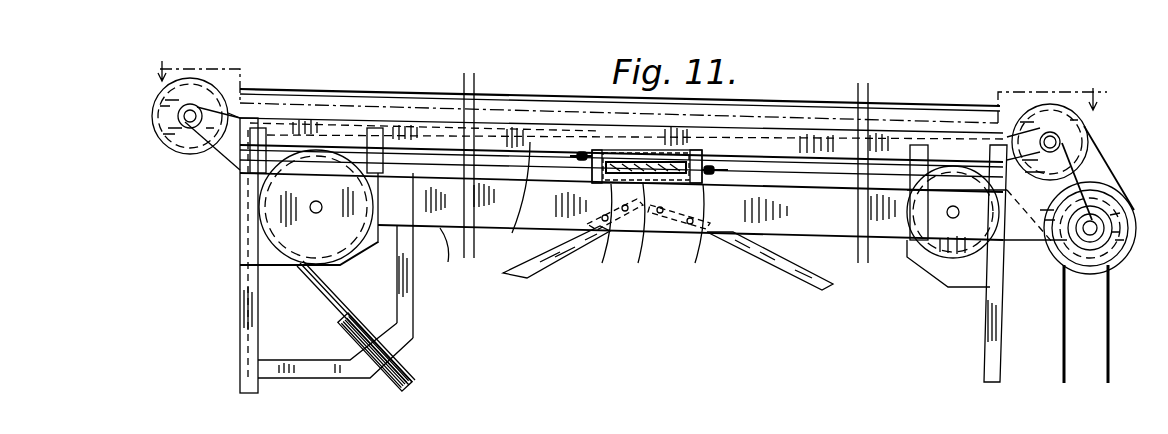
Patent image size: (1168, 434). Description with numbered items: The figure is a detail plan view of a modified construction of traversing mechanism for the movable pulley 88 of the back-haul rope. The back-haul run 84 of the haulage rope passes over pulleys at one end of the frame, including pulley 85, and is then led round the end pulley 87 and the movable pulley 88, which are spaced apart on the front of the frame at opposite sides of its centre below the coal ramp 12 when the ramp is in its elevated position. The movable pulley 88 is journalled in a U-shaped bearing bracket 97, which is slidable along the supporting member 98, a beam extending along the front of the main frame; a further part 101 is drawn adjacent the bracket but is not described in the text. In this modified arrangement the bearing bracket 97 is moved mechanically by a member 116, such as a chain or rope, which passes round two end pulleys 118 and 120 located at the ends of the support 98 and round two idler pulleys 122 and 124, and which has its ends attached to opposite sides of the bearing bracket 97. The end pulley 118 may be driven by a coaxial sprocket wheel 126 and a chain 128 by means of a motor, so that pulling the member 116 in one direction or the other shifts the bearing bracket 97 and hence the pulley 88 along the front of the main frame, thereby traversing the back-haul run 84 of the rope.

The coal ramp 12 is at (632, 81).
The back-haul run 84 is at (330, 298).
The pulley 85 is at (388, 377).
The end pulley 87 is at (262, 229).
The movable pulley 88 is at (648, 236).
The bearing bracket 97 is at (598, 150).
The supporting member 98 is at (457, 179).
The arm 101 is at (557, 215).
The member 116 is at (470, 233).
The end pulley 118 is at (1060, 257).
The end pulley 120 is at (183, 150).
The idler pulley 122 is at (1047, 108).
The idler pulley 124 is at (925, 258).
The sprocket wheel 126 is at (1093, 270).
The chain 128 is at (1065, 338).